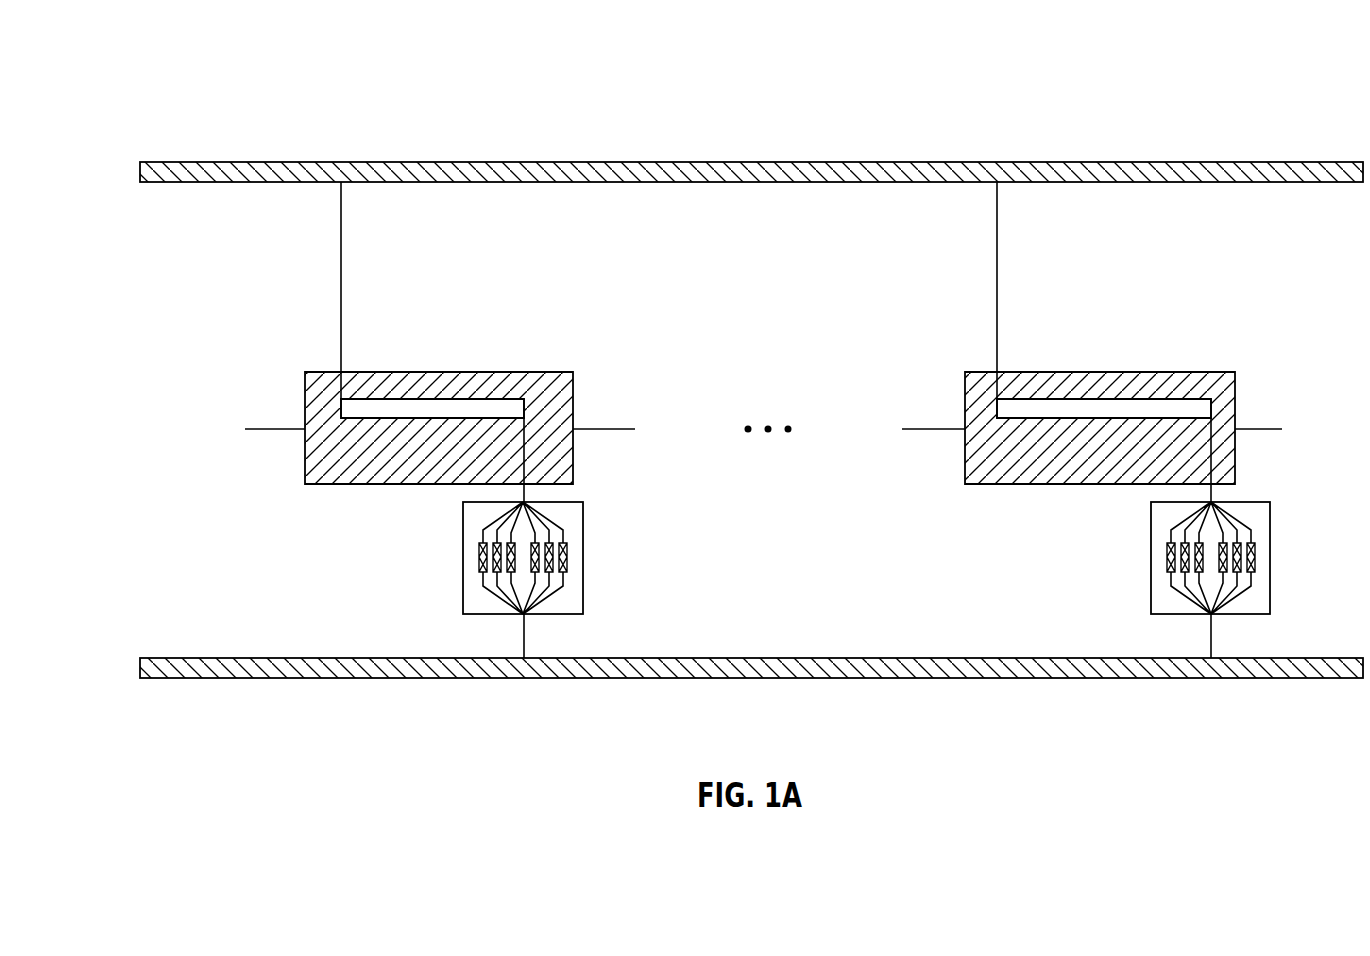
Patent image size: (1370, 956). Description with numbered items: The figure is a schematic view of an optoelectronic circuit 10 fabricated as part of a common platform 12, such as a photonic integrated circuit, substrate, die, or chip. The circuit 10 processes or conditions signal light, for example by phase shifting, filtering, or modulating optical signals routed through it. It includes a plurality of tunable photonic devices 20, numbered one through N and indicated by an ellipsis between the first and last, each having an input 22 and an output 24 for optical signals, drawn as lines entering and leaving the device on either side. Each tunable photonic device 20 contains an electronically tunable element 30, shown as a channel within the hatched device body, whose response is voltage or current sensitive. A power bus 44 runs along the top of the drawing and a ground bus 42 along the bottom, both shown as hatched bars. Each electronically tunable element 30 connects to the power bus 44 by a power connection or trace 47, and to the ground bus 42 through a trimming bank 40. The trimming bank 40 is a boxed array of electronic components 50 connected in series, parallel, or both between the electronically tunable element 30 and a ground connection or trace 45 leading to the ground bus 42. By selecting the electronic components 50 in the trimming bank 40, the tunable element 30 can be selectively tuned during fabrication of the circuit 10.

The optoelectronic circuit 10 is at (213, 86).
The common platform 12 is at (834, 136).
The tunable photonic device 20 is at (326, 512).
The input 22 is at (258, 430).
The output 24 is at (620, 430).
The electronically tunable element 30 is at (457, 399).
The trimming bank 40 is at (602, 552).
The ground bus 42 is at (1045, 678).
The power bus 44 is at (1252, 162).
The ground connection or trace 45 is at (524, 625).
The power connection or trace 47 is at (341, 255).
The electronic components 50 is at (484, 555).